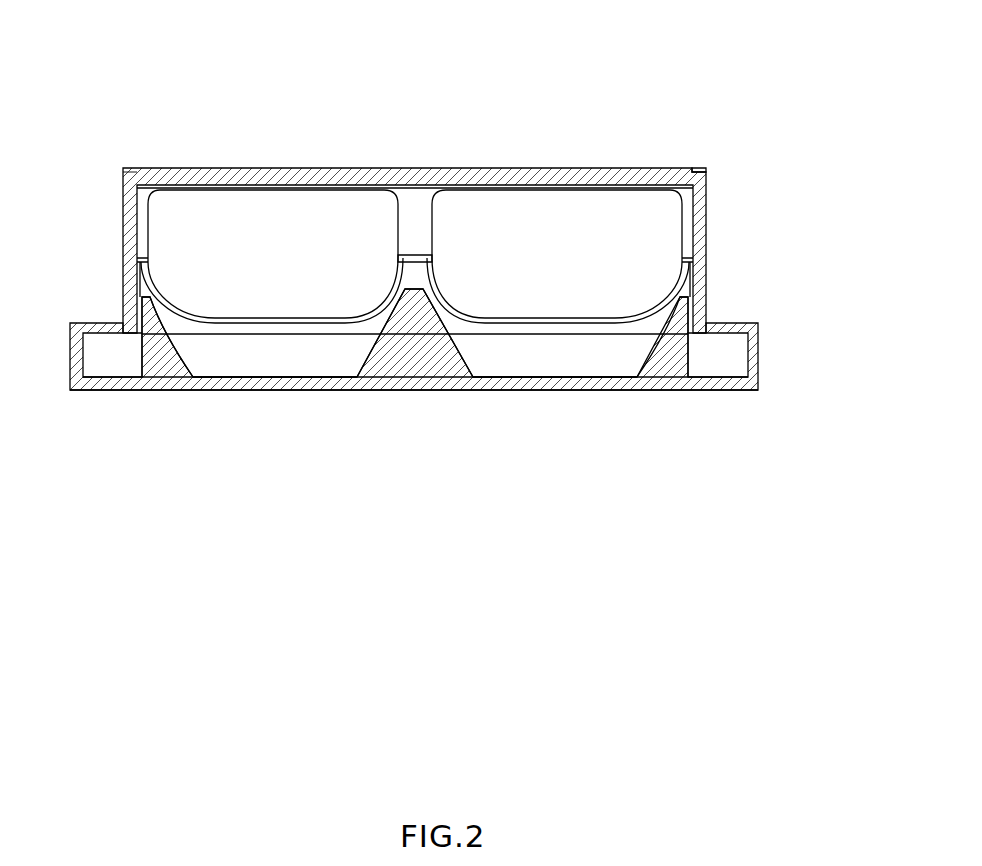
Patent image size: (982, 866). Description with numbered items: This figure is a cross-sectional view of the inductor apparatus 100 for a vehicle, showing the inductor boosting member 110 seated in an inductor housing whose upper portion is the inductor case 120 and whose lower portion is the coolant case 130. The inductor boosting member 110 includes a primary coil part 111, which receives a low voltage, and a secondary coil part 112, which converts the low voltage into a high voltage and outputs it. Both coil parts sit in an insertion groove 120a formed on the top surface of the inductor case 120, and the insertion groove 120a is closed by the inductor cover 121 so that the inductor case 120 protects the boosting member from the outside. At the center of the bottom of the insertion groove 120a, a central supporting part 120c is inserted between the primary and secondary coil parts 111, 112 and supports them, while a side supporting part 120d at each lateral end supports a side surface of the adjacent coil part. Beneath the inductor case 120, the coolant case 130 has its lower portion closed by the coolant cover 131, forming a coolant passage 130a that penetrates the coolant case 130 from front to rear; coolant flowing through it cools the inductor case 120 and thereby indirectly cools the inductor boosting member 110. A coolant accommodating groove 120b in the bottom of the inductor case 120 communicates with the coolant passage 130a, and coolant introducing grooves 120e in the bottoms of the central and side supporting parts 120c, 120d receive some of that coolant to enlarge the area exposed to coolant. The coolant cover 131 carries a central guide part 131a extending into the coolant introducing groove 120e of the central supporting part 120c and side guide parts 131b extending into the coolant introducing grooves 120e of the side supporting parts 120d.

The inductor apparatus 100 is at (682, 98).
The inductor boosting member 110 is at (480, 93).
The primary coil part 111 is at (295, 200).
The secondary coil part 112 is at (463, 200).
The inductor case 120 is at (702, 238).
The insertion groove 120a is at (148, 187).
The coolant accommodating groove 120b is at (243, 328).
The central supporting part 120c is at (440, 272).
The side supporting part 120d is at (140, 256).
The coolant introducing groove 120e is at (138, 285).
The inductor cover 121 is at (705, 172).
The coolant case 130 is at (757, 340).
The coolant passage 130a is at (299, 353).
The coolant cover 131 is at (753, 388).
The central guide part 131a is at (410, 355).
The side guide part 131b is at (160, 357).